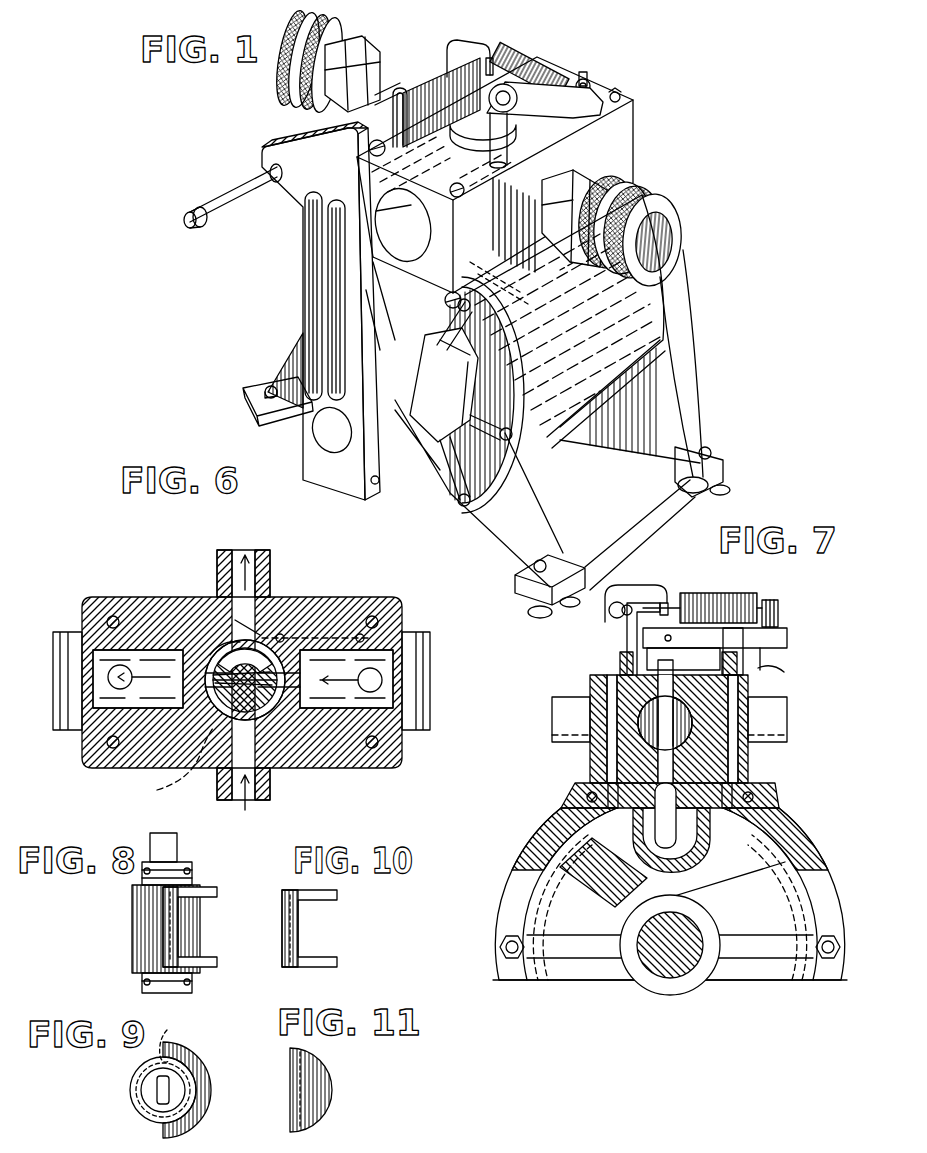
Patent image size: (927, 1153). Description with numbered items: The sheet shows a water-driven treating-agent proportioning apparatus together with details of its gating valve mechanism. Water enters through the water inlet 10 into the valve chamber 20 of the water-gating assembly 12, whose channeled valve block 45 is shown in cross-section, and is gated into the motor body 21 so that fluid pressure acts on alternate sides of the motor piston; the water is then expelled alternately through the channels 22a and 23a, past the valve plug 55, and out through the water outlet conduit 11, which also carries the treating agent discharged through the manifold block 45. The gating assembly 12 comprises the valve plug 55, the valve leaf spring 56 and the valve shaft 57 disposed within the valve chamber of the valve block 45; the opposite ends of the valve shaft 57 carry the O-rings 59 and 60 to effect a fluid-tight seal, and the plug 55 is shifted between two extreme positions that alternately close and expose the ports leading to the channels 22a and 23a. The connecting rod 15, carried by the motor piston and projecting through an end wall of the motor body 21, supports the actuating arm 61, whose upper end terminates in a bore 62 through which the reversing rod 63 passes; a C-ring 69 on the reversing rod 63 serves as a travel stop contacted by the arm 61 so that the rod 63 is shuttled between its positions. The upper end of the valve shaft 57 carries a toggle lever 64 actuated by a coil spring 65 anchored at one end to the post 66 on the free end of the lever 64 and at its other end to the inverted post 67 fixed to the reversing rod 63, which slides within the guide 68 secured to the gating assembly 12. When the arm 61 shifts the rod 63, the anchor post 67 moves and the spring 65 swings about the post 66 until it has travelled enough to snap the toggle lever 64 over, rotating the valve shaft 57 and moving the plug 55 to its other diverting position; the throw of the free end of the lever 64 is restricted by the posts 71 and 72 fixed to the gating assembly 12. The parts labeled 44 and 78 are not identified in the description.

In FIG. 1, the water inlet 10 is at (577, 175).
In FIG. 6, the water inlet 10 is at (270, 789).
In FIG. 7, the water inlet 10 is at (770, 742).
In FIG. 1, the water outlet conduit 11 is at (398, 85).
In FIG. 6, the water outlet conduit 11 is at (268, 583).
In FIG. 7, the water outlet conduit 11 is at (568, 742).
In FIG. 1, the water-gating assembly 12 is at (647, 112).
In FIG. 6, the water-gating assembly 12 is at (339, 589).
In FIG. 7, the water-gating assembly 12 is at (670, 827).
In FIG. 1, the connecting rod 15 is at (330, 437).
In FIG. 7, the connecting rod 15 is at (690, 930).
In FIG. 6, the valve chamber 20 is at (213, 640).
In FIG. 1, the motor body 21 is at (585, 350).
In FIG. 6, the channel 22a is at (122, 683).
In FIG. 6, the channel 23a is at (366, 682).
In FIG. 6, the rotary valve member 44 is at (280, 710).
In FIG. 7, the rotary valve member 44 is at (677, 783).
In FIG. 1, the valve block 45 is at (498, 240).
In FIG. 6, the valve block 45 is at (353, 770).
In FIG. 6, the valve plug 55 is at (207, 703).
In FIG. 10, the valve plug 55 is at (307, 925).
In FIG. 9, the valve plug 55 is at (220, 1063).
In FIG. 11, the valve plug 55 is at (323, 1077).
In FIG. 6, the valve leaf spring 56 is at (210, 656).
In FIG. 8, the valve leaf spring 56 is at (170, 927).
In FIG. 10, the valve leaf spring 56 is at (290, 923).
In FIG. 9, the valve leaf spring 56 is at (178, 1039).
In FIG. 8, the valve shaft 57 is at (133, 937).
In FIG. 9, the valve shaft 57 is at (150, 1107).
In FIG. 8, the O-ring 59 is at (192, 870).
In FIG. 8, the O-ring 60 is at (192, 982).
In FIG. 1, the actuating arm 61 is at (308, 302).
In FIG. 1, the bore 62 is at (270, 182).
In FIG. 1, the reversing rod 63 is at (226, 183).
In FIG. 7, the reversing rod 63 is at (617, 616).
In FIG. 1, the toggle lever 64 is at (550, 101).
In FIG. 6, the toggle lever 64 is at (167, 766).
In FIG. 7, the toggle lever 64 is at (767, 648).
In FIG. 1, the coil spring 65 is at (540, 55).
In FIG. 7, the coil spring 65 is at (728, 597).
In FIG. 1, the post 66 is at (617, 90).
In FIG. 7, the post 66 is at (778, 623).
In FIG. 1, the inverted post 67 is at (489, 56).
In FIG. 7, the inverted post 67 is at (667, 600).
In FIG. 1, the guide 68 is at (420, 90).
In FIG. 7, the guide 68 is at (630, 640).
In FIG. 1, the C-ring 69 is at (205, 225).
In FIG. 1, the post 71 is at (514, 224).
In FIG. 7, the post 71 is at (706, 664).
In FIG. 1, the post 72 is at (585, 78).
In FIG. 1, the foot 78 is at (552, 598).